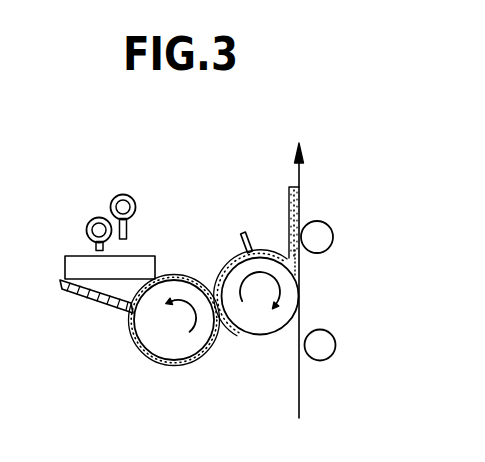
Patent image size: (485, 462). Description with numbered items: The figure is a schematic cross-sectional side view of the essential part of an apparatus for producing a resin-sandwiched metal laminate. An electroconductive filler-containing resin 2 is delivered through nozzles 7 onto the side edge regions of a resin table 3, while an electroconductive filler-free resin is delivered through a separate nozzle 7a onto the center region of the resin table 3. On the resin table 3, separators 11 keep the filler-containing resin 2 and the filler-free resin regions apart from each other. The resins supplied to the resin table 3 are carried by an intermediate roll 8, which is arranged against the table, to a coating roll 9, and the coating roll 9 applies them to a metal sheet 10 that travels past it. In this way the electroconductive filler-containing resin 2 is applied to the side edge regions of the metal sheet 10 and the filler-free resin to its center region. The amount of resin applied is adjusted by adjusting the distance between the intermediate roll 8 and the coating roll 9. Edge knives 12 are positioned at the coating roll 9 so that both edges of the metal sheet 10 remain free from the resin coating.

The electroconductive filler-containing resin 2 is at (124, 283).
The resin table 3 is at (112, 304).
The nozzles 7 is at (114, 197).
The nozzle 7a is at (91, 220).
The intermediate roll 8 is at (173, 345).
The coating roll 9 is at (256, 316).
The metal sheet 10 is at (300, 391).
The separators 11 is at (90, 272).
The edge knives 12 is at (242, 236).